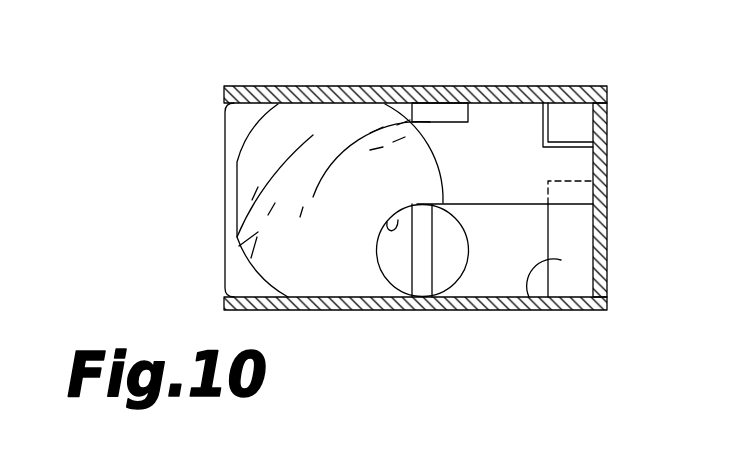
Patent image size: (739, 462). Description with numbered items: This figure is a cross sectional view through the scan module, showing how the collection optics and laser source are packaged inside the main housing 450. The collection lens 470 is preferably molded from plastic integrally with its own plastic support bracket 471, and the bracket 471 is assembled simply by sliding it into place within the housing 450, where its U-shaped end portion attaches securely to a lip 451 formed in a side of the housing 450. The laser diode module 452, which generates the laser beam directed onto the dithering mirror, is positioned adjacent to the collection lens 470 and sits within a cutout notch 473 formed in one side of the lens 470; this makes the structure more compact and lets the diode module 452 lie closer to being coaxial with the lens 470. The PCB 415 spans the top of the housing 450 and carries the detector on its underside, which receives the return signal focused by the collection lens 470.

The PCB 415 is at (540, 85).
The main housing 450 is at (333, 305).
The lip 451 is at (541, 308).
The laser diode module 452 is at (445, 262).
The collection lens 470 is at (333, 124).
The support bracket 471 is at (222, 196).
The cutout notch 473 is at (398, 221).